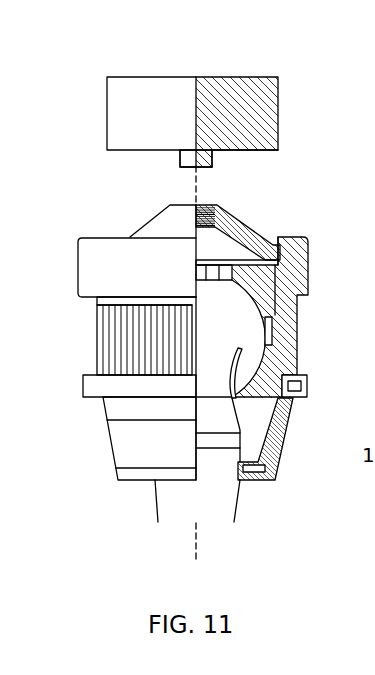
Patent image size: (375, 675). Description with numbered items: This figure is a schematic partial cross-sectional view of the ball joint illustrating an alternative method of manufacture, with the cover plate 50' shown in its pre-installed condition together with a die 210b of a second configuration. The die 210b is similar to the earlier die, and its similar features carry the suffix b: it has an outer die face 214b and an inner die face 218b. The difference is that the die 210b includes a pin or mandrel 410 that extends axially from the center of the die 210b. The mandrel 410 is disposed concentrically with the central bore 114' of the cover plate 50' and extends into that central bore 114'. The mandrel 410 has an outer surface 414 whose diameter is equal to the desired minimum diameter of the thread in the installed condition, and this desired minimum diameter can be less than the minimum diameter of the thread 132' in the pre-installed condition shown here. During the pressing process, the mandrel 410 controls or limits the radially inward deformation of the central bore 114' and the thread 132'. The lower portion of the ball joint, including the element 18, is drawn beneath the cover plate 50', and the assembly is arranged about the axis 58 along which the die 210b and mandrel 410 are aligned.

The mandrel 410 is at (186, 150).
The inner die face 218b is at (230, 150).
The die 210b is at (117, 108).
The outer surface 414 is at (178, 162).
The outer die face 214b is at (247, 151).
The cover plate 50' is at (223, 220).
The thread 132' is at (151, 210).
The central bore 114' is at (106, 300).
The connector 18 is at (103, 448).
The central axis 58 is at (197, 543).